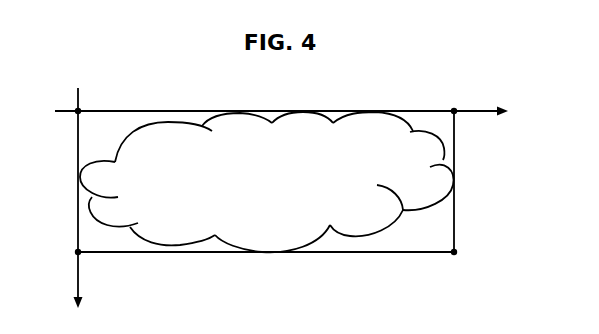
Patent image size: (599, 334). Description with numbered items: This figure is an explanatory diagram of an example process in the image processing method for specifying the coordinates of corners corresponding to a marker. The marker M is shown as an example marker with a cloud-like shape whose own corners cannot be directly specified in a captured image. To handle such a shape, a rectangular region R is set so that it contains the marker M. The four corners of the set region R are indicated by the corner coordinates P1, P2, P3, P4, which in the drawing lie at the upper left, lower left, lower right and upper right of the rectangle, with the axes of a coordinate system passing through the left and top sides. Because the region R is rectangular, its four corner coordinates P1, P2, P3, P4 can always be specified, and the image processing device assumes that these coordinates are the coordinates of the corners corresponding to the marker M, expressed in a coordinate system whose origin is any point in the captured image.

The first corner coordinate P1 is at (64, 99).
The second corner coordinate P2 is at (61, 253).
The third corner coordinate P3 is at (454, 265).
The fourth corner coordinate P4 is at (454, 99).
The marker M is at (428, 148).
The rectangular region R is at (454, 216).